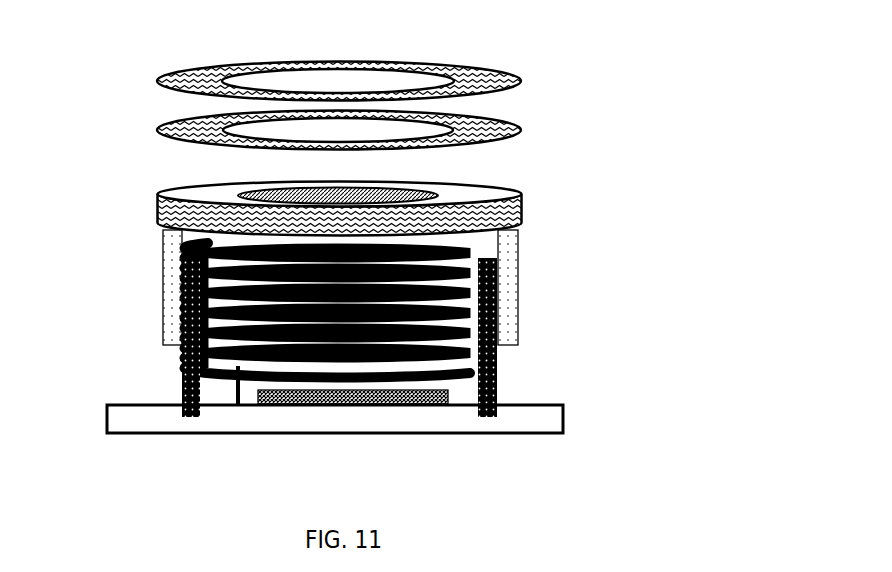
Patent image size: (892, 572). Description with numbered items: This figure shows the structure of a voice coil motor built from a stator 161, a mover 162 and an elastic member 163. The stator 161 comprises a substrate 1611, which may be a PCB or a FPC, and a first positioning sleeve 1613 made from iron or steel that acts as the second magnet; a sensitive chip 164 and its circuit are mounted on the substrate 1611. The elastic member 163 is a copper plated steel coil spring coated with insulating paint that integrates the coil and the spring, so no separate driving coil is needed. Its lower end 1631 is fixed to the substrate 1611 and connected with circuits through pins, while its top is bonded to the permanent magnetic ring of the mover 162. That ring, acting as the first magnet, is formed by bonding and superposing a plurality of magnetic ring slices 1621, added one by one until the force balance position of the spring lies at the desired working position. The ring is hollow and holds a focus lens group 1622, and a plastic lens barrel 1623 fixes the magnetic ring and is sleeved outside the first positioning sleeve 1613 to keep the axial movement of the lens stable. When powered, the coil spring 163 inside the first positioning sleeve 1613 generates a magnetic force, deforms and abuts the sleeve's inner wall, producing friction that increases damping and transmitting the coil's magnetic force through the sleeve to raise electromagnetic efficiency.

The magnetic ring slices 1621 is at (171, 121).
The mover 162 is at (523, 200).
The focus lens group 1622 is at (435, 182).
The lens barrel 1623 is at (508, 303).
The elastic member 163 is at (220, 282).
The coil lead 1631 is at (237, 410).
The stator 161 is at (180, 403).
The first positioning sleeve 1613 is at (497, 387).
The sensitive chip 164 is at (433, 408).
The substrate 1611 is at (342, 420).